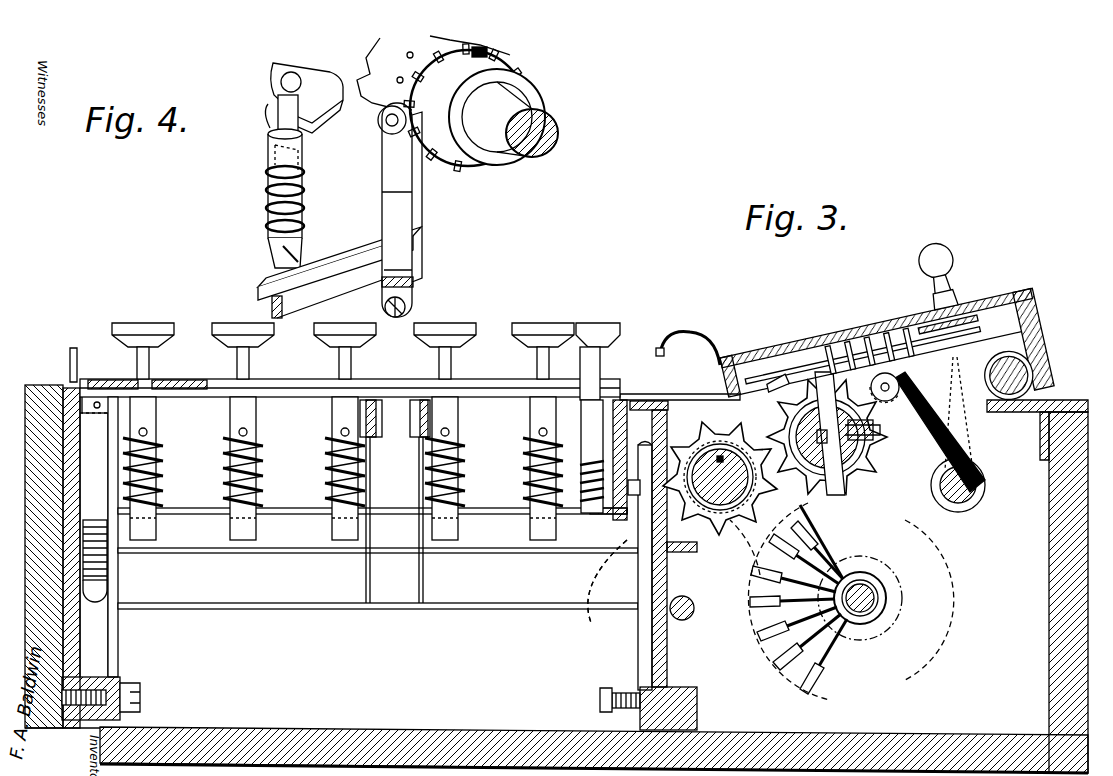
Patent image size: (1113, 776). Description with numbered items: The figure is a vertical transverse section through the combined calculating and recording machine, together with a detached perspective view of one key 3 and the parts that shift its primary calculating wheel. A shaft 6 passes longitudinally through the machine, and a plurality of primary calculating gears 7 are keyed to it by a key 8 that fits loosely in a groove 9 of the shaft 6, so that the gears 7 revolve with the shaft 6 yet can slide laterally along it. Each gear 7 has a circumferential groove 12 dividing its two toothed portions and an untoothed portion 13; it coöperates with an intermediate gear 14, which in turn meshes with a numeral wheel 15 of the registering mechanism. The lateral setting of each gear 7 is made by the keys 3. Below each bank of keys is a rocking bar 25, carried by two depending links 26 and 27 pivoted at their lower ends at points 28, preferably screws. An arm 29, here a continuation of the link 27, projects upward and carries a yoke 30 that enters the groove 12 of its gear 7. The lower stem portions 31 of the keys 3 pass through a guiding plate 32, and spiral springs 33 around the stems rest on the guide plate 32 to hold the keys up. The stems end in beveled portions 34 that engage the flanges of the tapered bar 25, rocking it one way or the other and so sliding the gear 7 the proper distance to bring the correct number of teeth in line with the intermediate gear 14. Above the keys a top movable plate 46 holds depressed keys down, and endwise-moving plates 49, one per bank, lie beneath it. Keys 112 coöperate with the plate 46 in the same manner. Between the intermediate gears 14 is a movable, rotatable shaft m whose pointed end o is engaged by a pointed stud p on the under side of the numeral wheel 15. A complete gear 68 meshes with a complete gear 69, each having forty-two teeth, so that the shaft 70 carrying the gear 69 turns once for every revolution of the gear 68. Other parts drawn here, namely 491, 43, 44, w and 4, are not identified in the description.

In FIG. 4, the key 3 is at (310, 72).
In FIG. 3, the key 3 is at (145, 324).
In FIG. 3, the key 112 is at (600, 343).
In FIG. 3, the pin 491 is at (70, 355).
In FIG. 3, the endwise-moving plate 49 is at (92, 378).
In FIG. 3, the top movable plate 46 is at (272, 384).
In FIG. 4, the stem portion 31 is at (300, 152).
In FIG. 3, the stem portion 31 is at (157, 426).
In FIG. 4, the spiral spring 33 is at (300, 196).
In FIG. 3, the spiral spring 33 is at (162, 488).
In FIG. 4, the beveled end 34 is at (298, 242).
In FIG. 3, the guiding plate 32 is at (516, 514).
In FIG. 3, the frame wall 43 is at (88, 518).
In FIG. 3, the spring 44 is at (105, 580).
In FIG. 3, the depending link 26 is at (120, 648).
In FIG. 4, the pivot point 28 is at (385, 307).
In FIG. 3, the pivot point 28 is at (130, 690).
In FIG. 4, the rocking bar 25 is at (345, 236).
In FIG. 3, the rocking bar 25 is at (507, 598).
In FIG. 3, the complete gear 68 is at (602, 628).
In FIG. 4, the depending link 27 is at (414, 258).
In FIG. 3, the depending link 27 is at (640, 655).
In FIG. 4, the arm 29 is at (414, 190).
In FIG. 3, the arm 29 is at (648, 532).
In FIG. 4, the yoke 30 is at (385, 96).
In FIG. 3, the yoke 30 is at (662, 458).
In FIG. 4, the shaft 6 is at (550, 124).
In FIG. 3, the shaft 6 is at (706, 458).
In FIG. 4, the primary calculating gear 7 is at (482, 76).
In FIG. 3, the primary calculating gear 7 is at (728, 450).
In FIG. 3, the key 8 is at (713, 455).
In FIG. 4, the groove 9 is at (528, 112).
In FIG. 3, the groove 9 is at (720, 477).
In FIG. 4, the circumferential groove 12 is at (440, 62).
In FIG. 3, the untoothed portion 13 is at (806, 490).
In FIG. 3, the numeral wheel 15 is at (882, 350).
In FIG. 3, the shaft m is at (838, 328).
In FIG. 3, the pointed end o is at (906, 310).
In FIG. 3, the pointed stud p is at (769, 390).
In FIG. 3, the roller w is at (902, 380).
In FIG. 3, the nut 4 is at (876, 428).
In FIG. 3, the intermediate gear 14 is at (925, 452).
In FIG. 3, the shaft 70 is at (888, 600).
In FIG. 3, the complete gear 69 is at (880, 690).